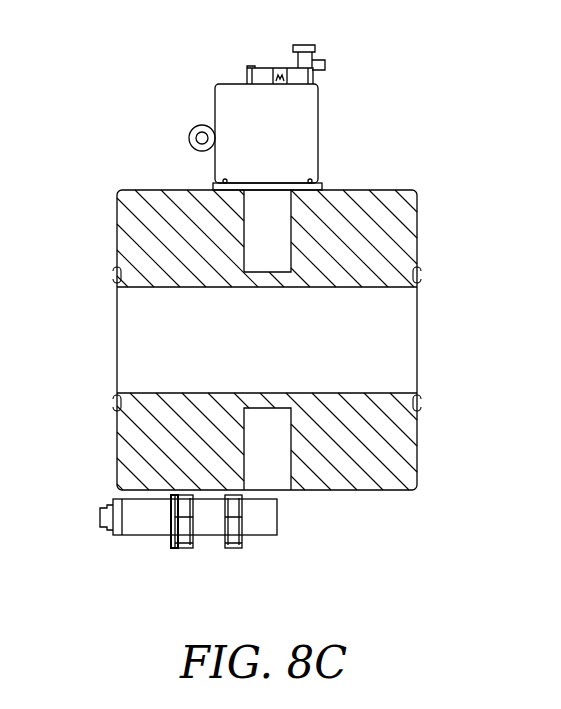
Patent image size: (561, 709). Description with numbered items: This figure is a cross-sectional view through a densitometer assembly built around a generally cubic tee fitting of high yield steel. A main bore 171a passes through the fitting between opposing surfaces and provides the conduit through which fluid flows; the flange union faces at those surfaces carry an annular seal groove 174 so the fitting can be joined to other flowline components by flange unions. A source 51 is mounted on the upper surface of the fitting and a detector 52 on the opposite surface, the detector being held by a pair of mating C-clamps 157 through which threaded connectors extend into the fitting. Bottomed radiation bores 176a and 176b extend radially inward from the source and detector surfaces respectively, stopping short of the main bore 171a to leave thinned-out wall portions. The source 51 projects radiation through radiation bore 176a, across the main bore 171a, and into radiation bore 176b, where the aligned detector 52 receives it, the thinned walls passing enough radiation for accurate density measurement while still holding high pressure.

The source 51 is at (243, 95).
The detector 52 is at (263, 523).
The C-clamps 157 is at (177, 550).
The main bore 171a is at (140, 333).
The annular seal groove 174 is at (417, 275).
The radiation bore 176a is at (270, 208).
The radiation bore 176b is at (275, 473).